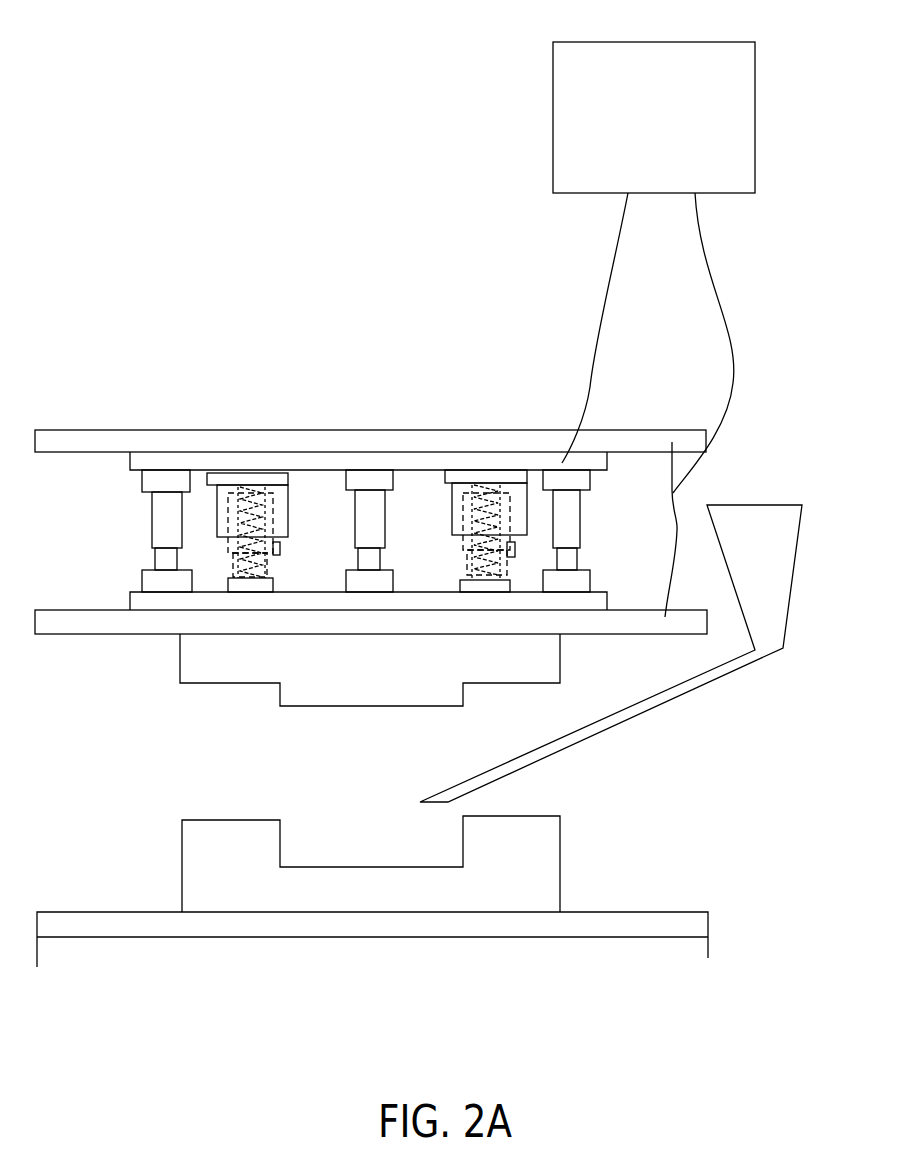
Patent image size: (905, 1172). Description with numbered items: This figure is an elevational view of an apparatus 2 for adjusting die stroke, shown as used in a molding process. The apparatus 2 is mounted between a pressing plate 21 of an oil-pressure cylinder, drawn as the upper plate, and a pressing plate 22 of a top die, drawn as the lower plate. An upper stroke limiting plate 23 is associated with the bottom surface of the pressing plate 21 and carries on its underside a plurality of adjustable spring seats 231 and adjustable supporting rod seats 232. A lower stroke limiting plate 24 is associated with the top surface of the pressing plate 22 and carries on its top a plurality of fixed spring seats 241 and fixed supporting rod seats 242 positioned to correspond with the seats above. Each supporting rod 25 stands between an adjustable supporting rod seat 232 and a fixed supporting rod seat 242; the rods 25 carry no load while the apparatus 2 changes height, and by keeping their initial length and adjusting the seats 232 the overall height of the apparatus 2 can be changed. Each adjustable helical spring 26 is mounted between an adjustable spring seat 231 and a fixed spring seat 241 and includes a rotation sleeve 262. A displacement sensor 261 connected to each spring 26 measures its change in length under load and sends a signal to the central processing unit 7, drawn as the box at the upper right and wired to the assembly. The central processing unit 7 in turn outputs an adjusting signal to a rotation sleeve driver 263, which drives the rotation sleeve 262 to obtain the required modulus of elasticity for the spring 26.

The apparatus for adjusting die stroke 2 is at (593, 449).
The central processing unit 7 is at (745, 72).
The pressing plate of oil-pressure cylinder 21 is at (543, 437).
The pressing plate of top die 22 is at (72, 622).
The upper stroke limiting plate 23 is at (147, 465).
The lower stroke limiting plate 24 is at (153, 600).
The supporting rod 25 is at (380, 508).
The adjustable spring seat 231 is at (470, 478).
The adjustable supporting rod seat 232 is at (363, 477).
The fixed spring seat 241 is at (465, 582).
The fixed supporting rod seat 242 is at (355, 582).
The adjustable helical spring 26 is at (218, 483).
The displacement sensor 261 is at (287, 500).
The rotation sleeve 262 is at (230, 553).
The rotation sleeve driver 263 is at (277, 549).